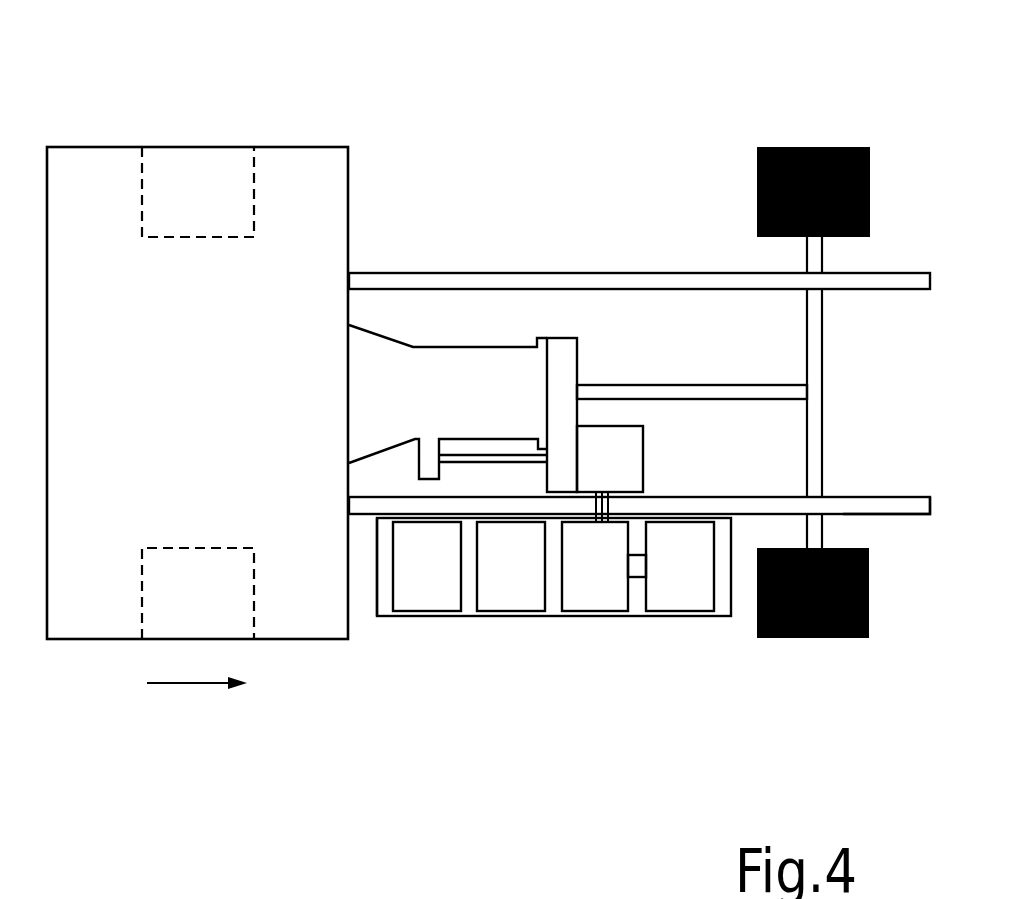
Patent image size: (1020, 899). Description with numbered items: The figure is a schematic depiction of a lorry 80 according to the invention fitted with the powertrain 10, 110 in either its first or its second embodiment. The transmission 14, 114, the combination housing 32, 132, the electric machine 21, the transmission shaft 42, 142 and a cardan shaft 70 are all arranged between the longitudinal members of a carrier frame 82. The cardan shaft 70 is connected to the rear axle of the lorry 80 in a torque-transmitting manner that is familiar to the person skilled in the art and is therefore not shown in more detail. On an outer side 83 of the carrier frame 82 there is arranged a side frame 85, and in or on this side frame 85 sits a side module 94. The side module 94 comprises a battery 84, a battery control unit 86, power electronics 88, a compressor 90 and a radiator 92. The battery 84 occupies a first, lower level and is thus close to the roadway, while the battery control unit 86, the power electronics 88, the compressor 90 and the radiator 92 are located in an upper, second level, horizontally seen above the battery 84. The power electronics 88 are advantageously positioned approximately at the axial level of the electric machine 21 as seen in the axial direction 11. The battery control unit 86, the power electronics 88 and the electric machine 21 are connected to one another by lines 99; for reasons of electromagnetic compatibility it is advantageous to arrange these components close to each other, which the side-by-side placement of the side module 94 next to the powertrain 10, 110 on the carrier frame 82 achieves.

The lorry 80 is at (233, 82).
The axial direction 11 is at (182, 683).
The powertrain 10 is at (615, 449).
The powertrain 110 is at (548, 196).
The transmission 14 is at (448, 286).
The transmission 114 is at (427, 368).
The combination housing 32 is at (618, 351).
The combination housing 132 is at (567, 363).
The cardan shaft 70 is at (642, 391).
The electric machine 21 is at (620, 455).
The transmission shaft 42 is at (448, 604).
The transmission shaft 142 is at (463, 456).
The carrier frame 82 is at (843, 507).
The outer side 83 is at (897, 515).
The lines 99 is at (608, 522).
The side module 94 is at (552, 700).
The battery 84 is at (383, 597).
The side frame 85 is at (375, 538).
The radiator 92 is at (428, 597).
The compressor 90 is at (512, 598).
The power electronics 88 is at (587, 598).
The battery control unit 86 is at (688, 603).